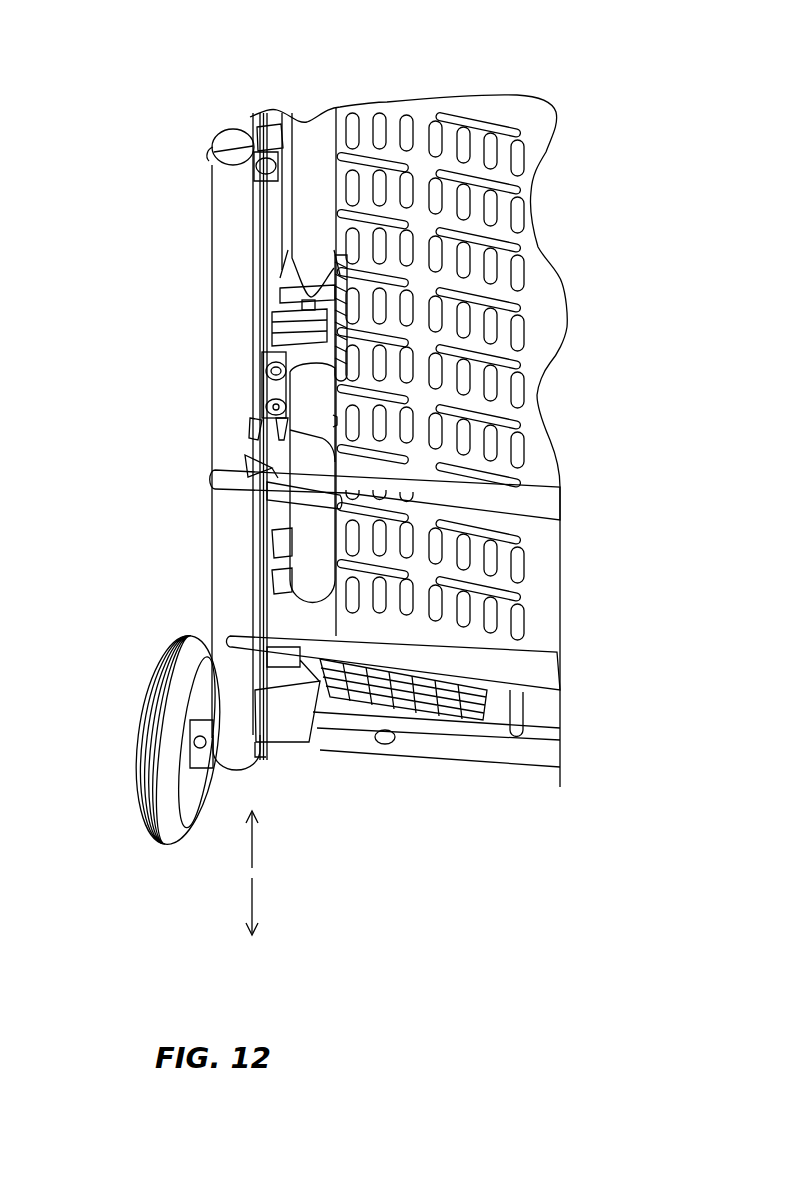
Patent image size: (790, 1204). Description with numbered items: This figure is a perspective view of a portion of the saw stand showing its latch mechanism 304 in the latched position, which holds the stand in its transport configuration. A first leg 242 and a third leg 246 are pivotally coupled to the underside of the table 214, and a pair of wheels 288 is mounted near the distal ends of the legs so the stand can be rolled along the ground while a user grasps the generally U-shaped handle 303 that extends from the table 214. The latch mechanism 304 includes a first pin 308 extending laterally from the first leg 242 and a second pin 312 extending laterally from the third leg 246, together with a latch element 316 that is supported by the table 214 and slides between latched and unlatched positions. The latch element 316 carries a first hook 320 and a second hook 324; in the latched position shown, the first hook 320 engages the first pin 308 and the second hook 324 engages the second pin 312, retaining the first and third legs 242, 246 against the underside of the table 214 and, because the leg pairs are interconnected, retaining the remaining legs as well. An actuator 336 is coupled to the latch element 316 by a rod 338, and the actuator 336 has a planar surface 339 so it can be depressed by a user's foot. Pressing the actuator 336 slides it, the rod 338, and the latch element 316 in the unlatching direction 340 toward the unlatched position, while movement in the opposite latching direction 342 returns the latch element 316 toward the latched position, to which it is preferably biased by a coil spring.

The table 214 is at (550, 287).
The first leg 242 is at (307, 150).
The third leg 246 is at (227, 231).
The wheels 288 is at (150, 843).
The handle 303 is at (490, 728).
The latch mechanism 304 is at (163, 467).
The first pin 308 is at (262, 367).
The second pin 312 is at (263, 397).
The latch element 316 is at (247, 430).
The first hook 320 is at (385, 574).
The second hook 324 is at (260, 417).
The actuator 336 is at (290, 744).
The rod 338 is at (283, 463).
The planar surface 339 is at (297, 727).
The unlatching direction 340 is at (262, 900).
The latching direction 342 is at (252, 840).